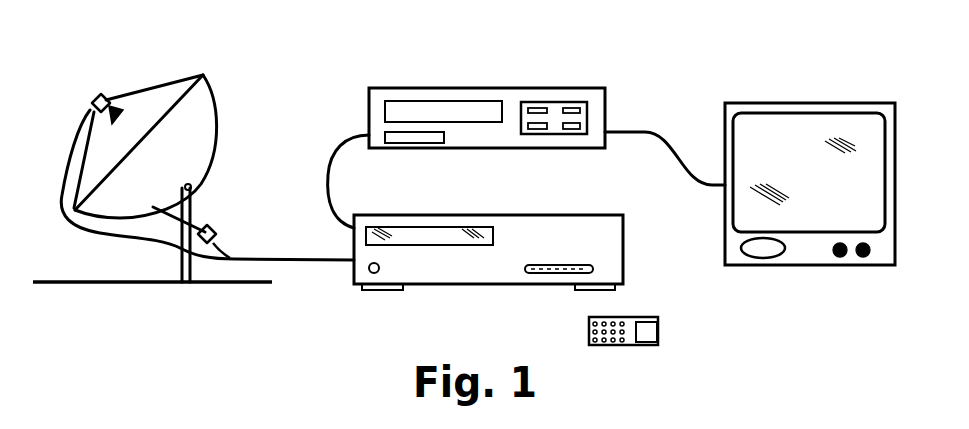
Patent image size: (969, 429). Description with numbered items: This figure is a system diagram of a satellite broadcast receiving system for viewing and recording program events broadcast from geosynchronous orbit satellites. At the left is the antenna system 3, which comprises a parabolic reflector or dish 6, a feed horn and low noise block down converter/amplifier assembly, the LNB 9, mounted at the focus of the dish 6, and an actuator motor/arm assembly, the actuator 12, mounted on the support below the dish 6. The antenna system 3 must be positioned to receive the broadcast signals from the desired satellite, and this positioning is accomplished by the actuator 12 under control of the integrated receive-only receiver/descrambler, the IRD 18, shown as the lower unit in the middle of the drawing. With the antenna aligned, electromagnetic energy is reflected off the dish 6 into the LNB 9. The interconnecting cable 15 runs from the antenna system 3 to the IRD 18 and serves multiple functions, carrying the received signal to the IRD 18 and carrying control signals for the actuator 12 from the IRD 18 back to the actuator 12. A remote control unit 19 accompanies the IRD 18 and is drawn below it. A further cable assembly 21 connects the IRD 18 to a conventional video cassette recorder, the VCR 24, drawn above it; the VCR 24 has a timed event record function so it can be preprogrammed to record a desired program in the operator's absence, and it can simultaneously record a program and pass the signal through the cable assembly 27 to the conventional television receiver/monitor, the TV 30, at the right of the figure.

The antenna system 3 is at (116, 38).
The parabolic reflector (dish) 6 is at (214, 113).
The feed horn and low noise block down converter/amplifier assembly (LNB) 9 is at (92, 98).
The actuator motor/arm assembly (actuator) 12 is at (211, 222).
The interconnecting cable 15 is at (282, 258).
The integrated television receive-only receiver/descrambler (IRD) 18 is at (487, 285).
The remote control unit 19 is at (657, 333).
The interconnecting cable assembly 21 is at (330, 155).
The video cassette recorder (VCR) 24 is at (470, 87).
The cable assembly 27 is at (638, 128).
The television receiver/monitor (TV) 30 is at (830, 266).